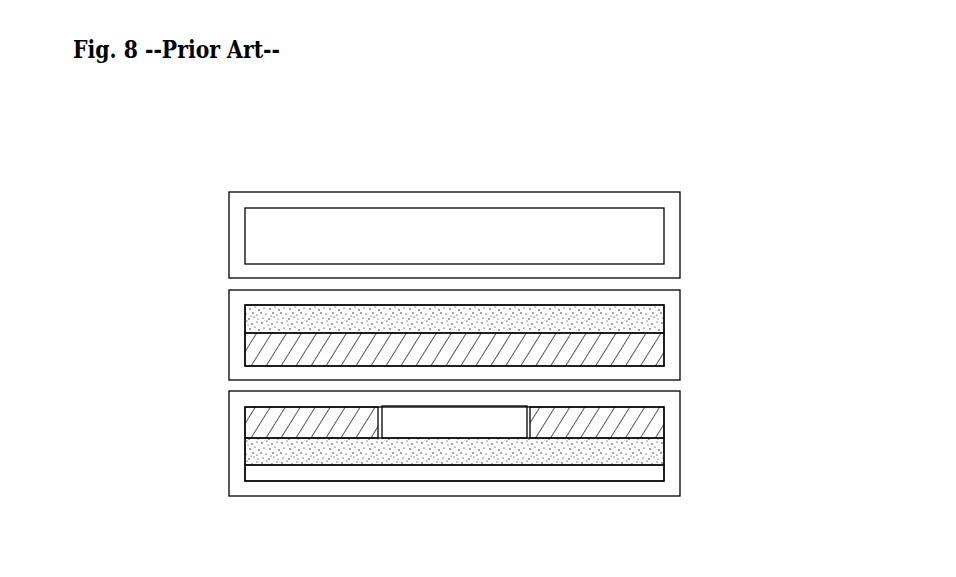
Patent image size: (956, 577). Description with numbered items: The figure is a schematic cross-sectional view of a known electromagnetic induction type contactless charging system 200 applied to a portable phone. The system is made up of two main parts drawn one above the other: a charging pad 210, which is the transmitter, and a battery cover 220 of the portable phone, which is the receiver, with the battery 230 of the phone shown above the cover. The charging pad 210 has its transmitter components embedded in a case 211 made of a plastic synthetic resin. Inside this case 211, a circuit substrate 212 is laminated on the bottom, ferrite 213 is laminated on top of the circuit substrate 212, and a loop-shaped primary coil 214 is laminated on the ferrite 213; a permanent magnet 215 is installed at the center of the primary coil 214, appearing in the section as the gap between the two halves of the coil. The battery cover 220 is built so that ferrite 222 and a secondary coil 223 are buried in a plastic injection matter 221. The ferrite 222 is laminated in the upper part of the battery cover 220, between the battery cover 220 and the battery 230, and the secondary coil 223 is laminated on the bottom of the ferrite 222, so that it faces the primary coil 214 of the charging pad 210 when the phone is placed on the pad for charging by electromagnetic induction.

The contactless charging system 200 is at (435, 338).
The battery 230 is at (644, 233).
The battery cover 220 is at (220, 337).
The plastic injection matter 221 is at (233, 312).
The ferrite 222 is at (647, 318).
The secondary coil 223 is at (647, 352).
The charging pad 210 is at (218, 476).
The case 211 is at (238, 449).
The circuit substrate 212 is at (647, 473).
The ferrite 213 is at (647, 453).
The primary coil 214 is at (262, 421).
The permanent magnet 215 is at (475, 420).